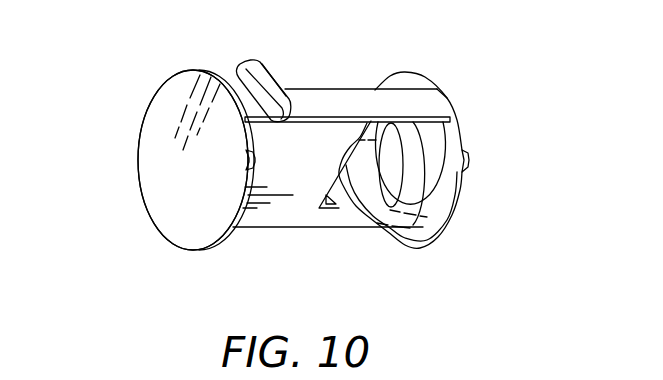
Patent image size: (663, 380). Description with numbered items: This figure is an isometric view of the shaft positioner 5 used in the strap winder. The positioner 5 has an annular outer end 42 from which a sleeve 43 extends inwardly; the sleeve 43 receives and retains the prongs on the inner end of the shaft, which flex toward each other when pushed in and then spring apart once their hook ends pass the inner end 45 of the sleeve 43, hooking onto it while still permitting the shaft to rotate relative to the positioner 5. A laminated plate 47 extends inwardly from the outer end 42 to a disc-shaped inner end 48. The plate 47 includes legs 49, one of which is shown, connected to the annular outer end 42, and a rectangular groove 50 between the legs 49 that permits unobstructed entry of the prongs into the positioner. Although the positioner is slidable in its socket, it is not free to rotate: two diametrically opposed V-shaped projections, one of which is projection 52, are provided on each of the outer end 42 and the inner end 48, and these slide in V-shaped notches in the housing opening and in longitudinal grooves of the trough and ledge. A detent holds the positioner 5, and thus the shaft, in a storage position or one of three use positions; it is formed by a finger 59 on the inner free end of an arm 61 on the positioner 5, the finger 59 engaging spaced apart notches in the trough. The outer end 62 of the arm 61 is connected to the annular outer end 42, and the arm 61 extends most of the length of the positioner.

The positioner 5 is at (178, 250).
The annular outer end 42 is at (403, 72).
The sleeve 43 is at (430, 205).
The inner end of the sleeve 45 is at (346, 218).
The laminated plate 47 is at (312, 168).
The disc-shaped inner end 48 is at (168, 93).
The legs 49 is at (328, 220).
The rectangular groove 50 is at (350, 150).
The V-shaped projection 52 is at (137, 158).
The finger 59 is at (252, 62).
The arm 61 is at (302, 89).
The outer end of the arm 62 is at (443, 98).